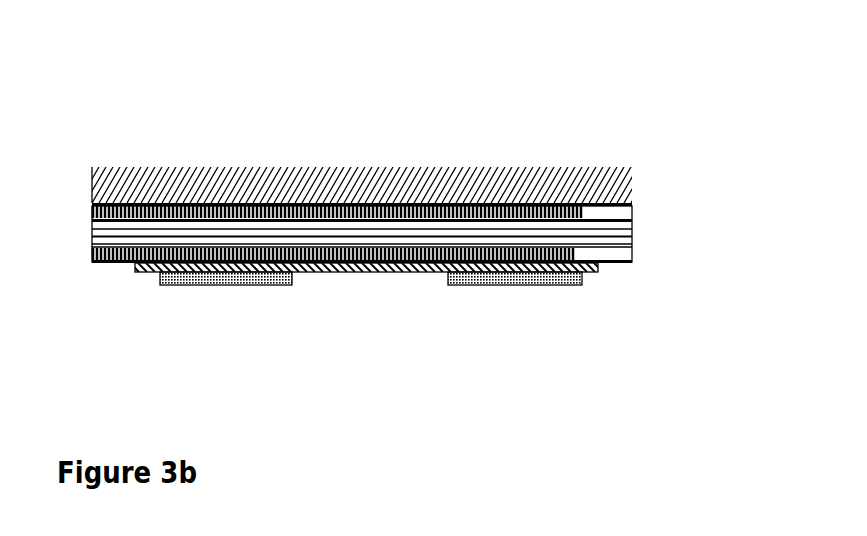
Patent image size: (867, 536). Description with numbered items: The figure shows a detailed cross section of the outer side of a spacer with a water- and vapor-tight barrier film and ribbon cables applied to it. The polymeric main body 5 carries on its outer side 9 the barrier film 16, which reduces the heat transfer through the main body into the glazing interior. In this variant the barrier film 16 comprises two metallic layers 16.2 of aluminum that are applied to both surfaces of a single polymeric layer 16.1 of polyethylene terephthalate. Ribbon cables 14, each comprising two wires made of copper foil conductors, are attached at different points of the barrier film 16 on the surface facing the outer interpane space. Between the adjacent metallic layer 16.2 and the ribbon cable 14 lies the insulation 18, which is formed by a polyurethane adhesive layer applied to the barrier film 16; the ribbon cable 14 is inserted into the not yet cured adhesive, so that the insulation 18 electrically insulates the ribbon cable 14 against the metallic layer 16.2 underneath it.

The polymeric main body 5 is at (327, 183).
The outer side 9 is at (112, 200).
The ribbon cable 14 is at (467, 287).
The barrier film 16 is at (783, 127).
The polymeric layer 16.1 is at (627, 232).
The metallic layer 16.2 is at (620, 212).
The insulation 18 is at (582, 268).